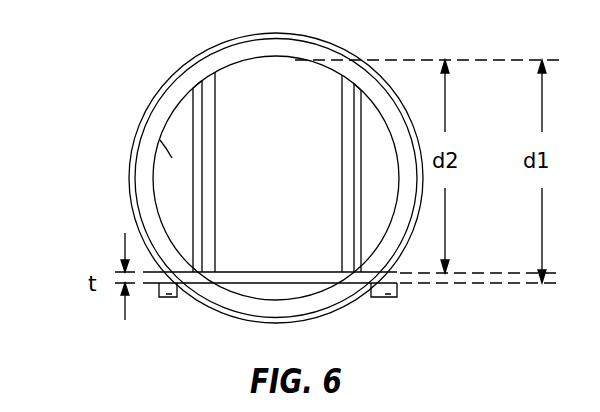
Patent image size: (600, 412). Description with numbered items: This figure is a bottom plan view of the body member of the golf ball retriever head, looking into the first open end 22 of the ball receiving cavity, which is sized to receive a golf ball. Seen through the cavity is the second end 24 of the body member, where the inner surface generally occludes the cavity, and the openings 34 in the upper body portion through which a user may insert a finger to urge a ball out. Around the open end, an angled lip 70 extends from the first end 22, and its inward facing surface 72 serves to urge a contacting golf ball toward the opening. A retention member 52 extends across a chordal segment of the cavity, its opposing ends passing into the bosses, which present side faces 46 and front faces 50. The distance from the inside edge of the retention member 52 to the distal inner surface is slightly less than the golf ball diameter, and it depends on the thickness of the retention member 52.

The first open end 22 is at (340, 44).
The inward facing surface 72 is at (218, 66).
The angled lip 70 is at (168, 80).
The openings 34 is at (176, 163).
The second end 24 is at (278, 173).
The retention member 52 is at (240, 276).
The side faces 46 is at (160, 289).
The front faces 50 is at (170, 297).